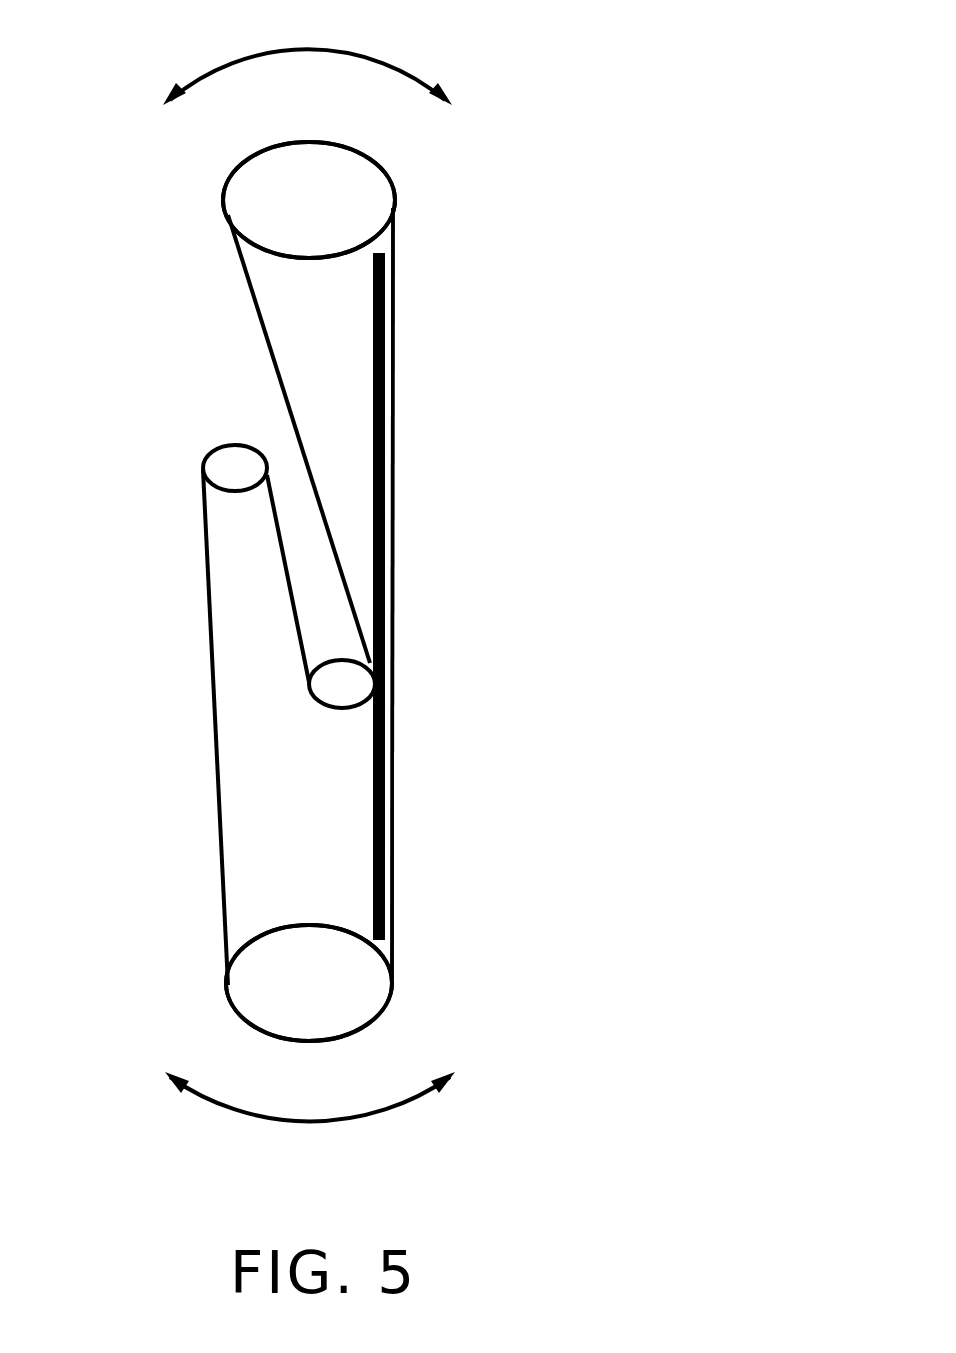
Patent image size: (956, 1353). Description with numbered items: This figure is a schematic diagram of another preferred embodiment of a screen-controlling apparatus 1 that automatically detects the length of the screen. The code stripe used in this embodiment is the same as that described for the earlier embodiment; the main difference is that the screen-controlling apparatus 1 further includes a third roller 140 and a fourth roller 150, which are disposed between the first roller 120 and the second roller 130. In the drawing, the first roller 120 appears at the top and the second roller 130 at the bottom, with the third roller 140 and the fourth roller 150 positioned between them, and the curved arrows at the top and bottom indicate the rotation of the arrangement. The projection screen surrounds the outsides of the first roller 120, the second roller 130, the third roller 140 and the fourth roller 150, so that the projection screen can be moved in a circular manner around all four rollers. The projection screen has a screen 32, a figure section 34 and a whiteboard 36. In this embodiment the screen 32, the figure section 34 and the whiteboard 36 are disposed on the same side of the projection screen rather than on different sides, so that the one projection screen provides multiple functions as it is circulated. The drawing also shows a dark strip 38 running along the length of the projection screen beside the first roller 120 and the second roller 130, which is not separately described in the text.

The screen-controlling apparatus 1 is at (517, 46).
The screen 32 is at (393, 488).
The figure 34 is at (217, 837).
The whiteboard 36 is at (267, 353).
The slot 38 is at (392, 327).
The first roller 120 is at (348, 210).
The second roller 130 is at (348, 1000).
The third roller 140 is at (227, 463).
The fourth roller 150 is at (352, 688).